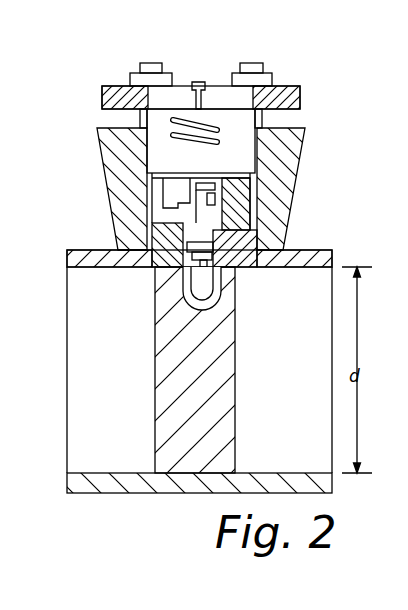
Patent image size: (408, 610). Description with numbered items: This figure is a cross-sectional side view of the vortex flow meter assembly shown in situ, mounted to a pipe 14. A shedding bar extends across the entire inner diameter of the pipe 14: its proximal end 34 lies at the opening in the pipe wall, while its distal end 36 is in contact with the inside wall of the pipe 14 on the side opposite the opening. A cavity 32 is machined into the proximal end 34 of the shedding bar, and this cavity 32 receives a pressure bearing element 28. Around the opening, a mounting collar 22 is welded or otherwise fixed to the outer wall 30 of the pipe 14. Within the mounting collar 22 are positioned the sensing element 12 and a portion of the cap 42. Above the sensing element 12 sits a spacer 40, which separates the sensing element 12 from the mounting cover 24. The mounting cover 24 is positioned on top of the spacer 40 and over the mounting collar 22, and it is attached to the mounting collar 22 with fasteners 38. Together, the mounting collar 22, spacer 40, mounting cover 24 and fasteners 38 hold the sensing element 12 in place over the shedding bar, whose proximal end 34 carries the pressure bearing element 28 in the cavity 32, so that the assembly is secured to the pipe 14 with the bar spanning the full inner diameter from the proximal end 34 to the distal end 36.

The sensing element 12 is at (215, 242).
The pipe 14 is at (77, 250).
The mounting collar 22 is at (122, 163).
The mounting cover 24 is at (107, 95).
The pressure bearing element 28 is at (183, 287).
The outer wall 30 is at (99, 247).
The cavity 32 is at (207, 307).
The proximal end 34 is at (250, 288).
The distal end 36 is at (247, 453).
The fasteners 38 is at (159, 72).
The spacer 40 is at (262, 122).
The cap 42 is at (222, 247).